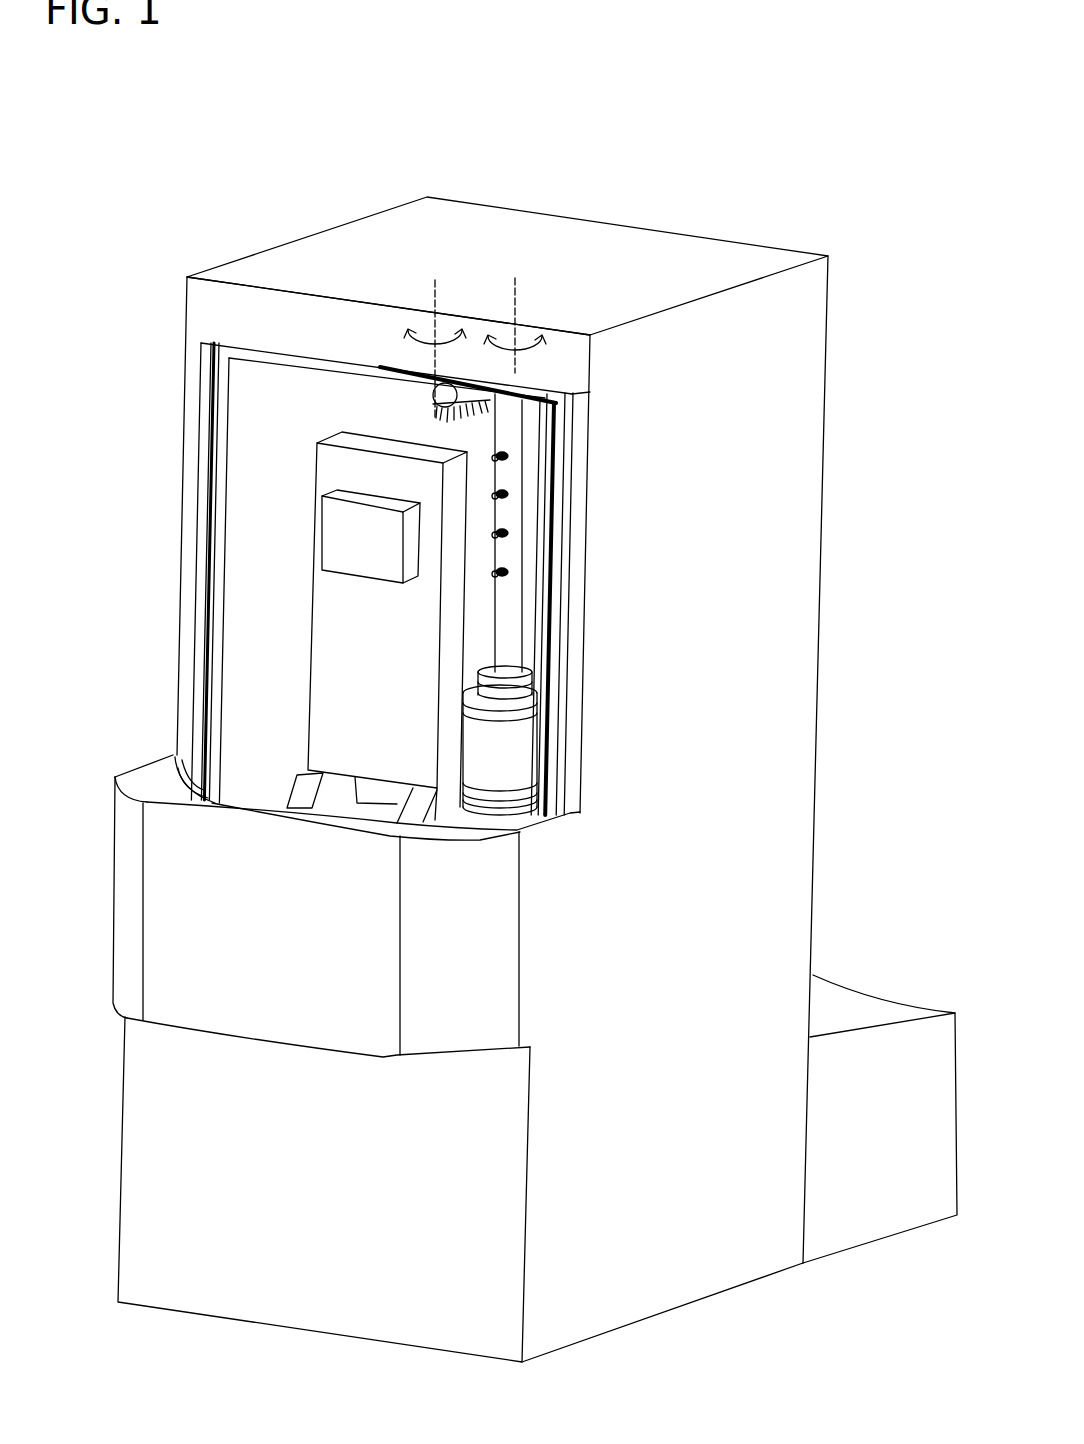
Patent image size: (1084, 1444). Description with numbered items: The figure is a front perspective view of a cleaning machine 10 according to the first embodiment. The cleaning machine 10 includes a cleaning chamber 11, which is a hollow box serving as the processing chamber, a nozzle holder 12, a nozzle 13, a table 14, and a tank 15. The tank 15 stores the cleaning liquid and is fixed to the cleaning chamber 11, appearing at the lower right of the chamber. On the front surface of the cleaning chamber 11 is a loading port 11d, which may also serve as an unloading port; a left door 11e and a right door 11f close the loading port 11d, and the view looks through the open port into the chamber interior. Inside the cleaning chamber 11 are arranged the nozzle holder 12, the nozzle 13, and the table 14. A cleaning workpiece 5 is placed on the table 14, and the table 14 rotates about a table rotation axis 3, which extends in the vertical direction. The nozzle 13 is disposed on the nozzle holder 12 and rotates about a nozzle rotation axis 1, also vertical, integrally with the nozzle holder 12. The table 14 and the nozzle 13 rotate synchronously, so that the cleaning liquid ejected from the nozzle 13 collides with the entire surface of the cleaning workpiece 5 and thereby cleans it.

The cleaning machine 10 is at (892, 97).
The cleaning chamber 11 is at (680, 232).
The loading port 11d is at (376, 372).
The left door 11e is at (224, 618).
The right door 11f is at (542, 642).
The nozzle rotation axis 1 is at (517, 305).
The table rotation axis 3 is at (432, 293).
The cleaning workpiece 5 is at (322, 530).
The nozzle holder 12 is at (528, 520).
The nozzle 13 is at (505, 462).
The table 14 is at (318, 630).
The tank 15 is at (890, 993).